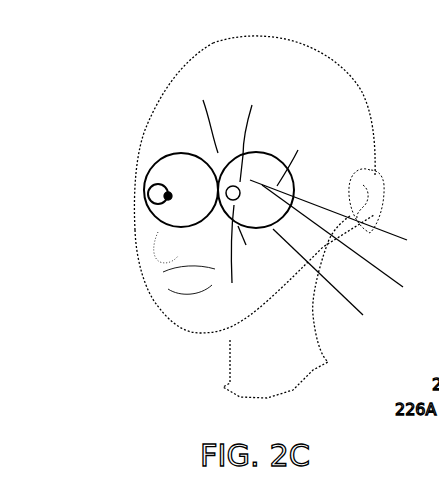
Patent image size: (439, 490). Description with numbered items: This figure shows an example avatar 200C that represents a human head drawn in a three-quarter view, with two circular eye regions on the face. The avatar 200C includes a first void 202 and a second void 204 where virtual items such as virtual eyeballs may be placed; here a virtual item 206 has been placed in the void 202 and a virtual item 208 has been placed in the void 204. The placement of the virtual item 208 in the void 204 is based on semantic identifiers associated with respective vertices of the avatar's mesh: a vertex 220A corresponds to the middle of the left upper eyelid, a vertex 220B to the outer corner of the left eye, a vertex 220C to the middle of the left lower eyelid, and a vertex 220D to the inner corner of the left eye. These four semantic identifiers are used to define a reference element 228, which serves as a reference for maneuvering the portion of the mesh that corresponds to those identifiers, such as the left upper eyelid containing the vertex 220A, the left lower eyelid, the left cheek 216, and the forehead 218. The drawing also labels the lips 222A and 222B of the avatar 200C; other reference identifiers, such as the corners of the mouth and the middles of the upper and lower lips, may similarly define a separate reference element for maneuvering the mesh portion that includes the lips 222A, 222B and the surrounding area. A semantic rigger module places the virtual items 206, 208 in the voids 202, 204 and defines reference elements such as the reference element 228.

The avatar 200C is at (104, 75).
The void 202 is at (148, 200).
The void 204 is at (246, 184).
The virtual item 206 is at (182, 175).
The virtual item 208 is at (344, 217).
The left cheek 216 is at (335, 283).
The forehead 218 is at (200, 116).
The vertex 220A is at (253, 134).
The vertex 220B is at (301, 159).
The vertex 220C is at (259, 246).
The vertex 220D is at (243, 255).
The lip 222A is at (172, 270).
The lip 222B is at (176, 285).
The reference element 228 is at (348, 243).